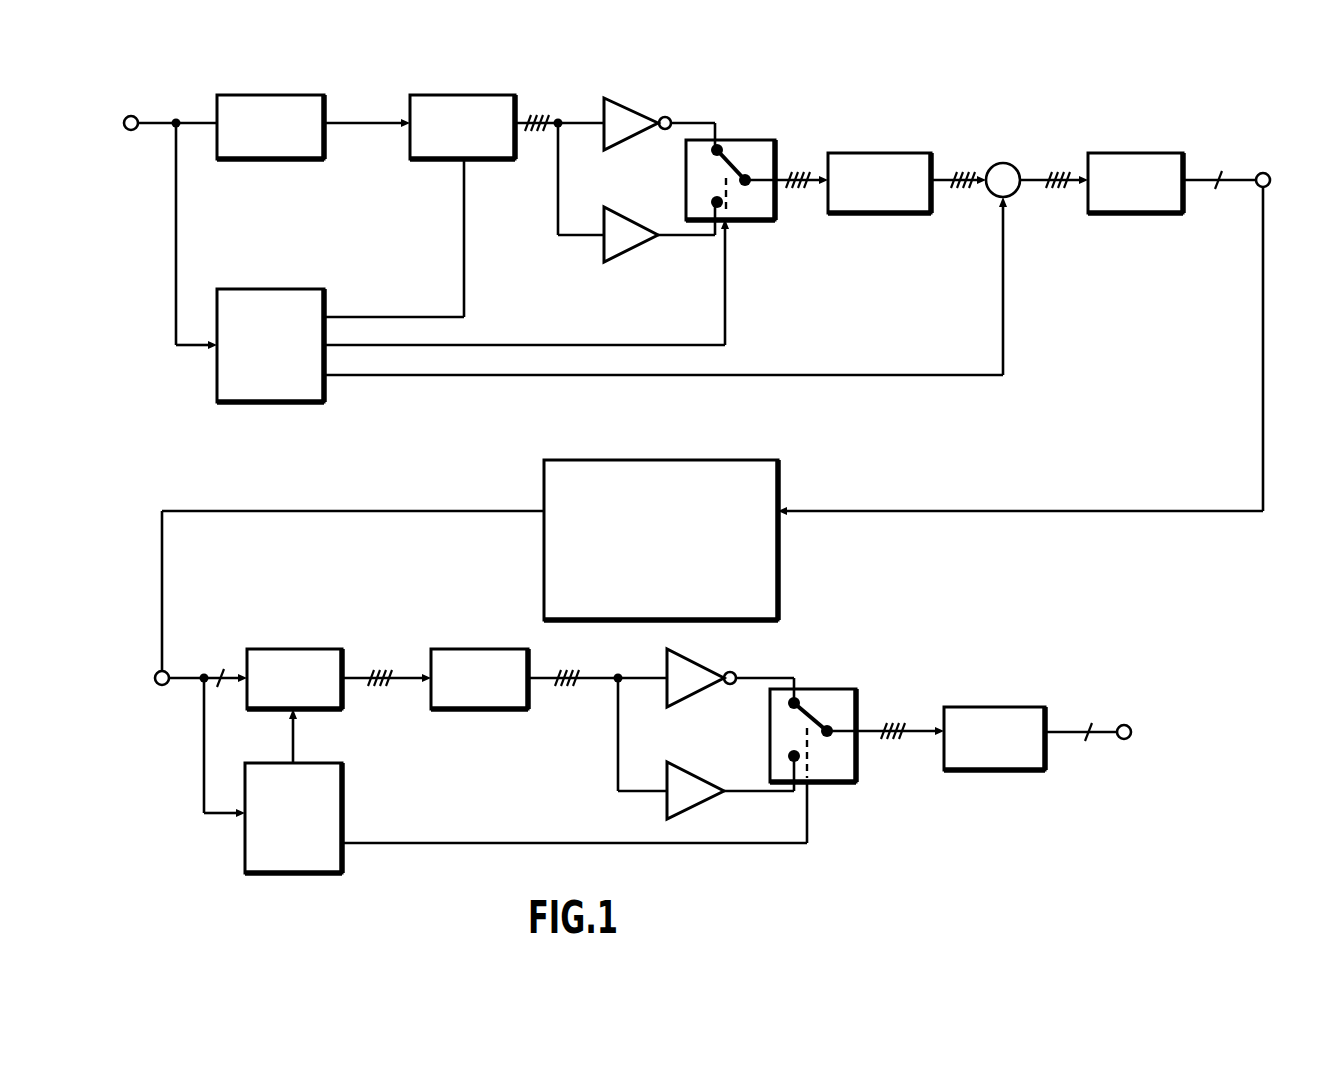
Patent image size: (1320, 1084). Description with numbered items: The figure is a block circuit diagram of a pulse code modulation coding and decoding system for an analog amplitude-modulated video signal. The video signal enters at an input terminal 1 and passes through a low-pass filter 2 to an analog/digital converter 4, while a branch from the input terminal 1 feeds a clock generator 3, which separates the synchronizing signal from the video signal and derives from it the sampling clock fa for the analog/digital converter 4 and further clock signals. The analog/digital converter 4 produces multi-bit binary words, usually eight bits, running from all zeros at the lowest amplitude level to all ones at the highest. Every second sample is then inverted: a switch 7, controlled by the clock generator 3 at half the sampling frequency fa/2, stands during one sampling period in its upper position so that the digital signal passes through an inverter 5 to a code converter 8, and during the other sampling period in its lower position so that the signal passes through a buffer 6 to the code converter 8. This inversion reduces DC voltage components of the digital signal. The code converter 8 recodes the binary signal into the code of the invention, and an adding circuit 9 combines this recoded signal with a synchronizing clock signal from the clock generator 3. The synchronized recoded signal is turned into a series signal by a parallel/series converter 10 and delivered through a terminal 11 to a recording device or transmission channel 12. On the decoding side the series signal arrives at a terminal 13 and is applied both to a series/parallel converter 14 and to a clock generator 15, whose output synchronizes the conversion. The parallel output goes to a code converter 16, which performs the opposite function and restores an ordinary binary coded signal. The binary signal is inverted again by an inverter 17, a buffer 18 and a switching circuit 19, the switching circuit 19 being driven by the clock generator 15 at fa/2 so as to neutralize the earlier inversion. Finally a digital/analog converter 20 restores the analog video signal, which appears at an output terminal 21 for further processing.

The input terminal 1 is at (136, 117).
The low-pass filter 2 is at (259, 146).
The clock generator 3 is at (259, 364).
The analog/digital converter 4 is at (451, 146).
The inverter 5 is at (630, 106).
The buffer 6 is at (626, 210).
The switch 7 is at (739, 138).
The code converter 8 is at (869, 202).
The adding circuit 9 is at (1008, 164).
The parallel/series converter 10 is at (1118, 202).
The terminal 11 is at (1276, 148).
The recording device or transmission channel 12 is at (636, 561).
The terminal 13 is at (155, 678).
The series/parallel converter 14 is at (277, 698).
The clock generator 15 is at (275, 837).
The code converter 16 is at (462, 698).
The inverter 17 is at (694, 657).
The buffer 18 is at (692, 772).
The switching circuit 19 is at (817, 689).
The digital/analog converter 20 is at (976, 757).
The output terminal 21 is at (1131, 727).